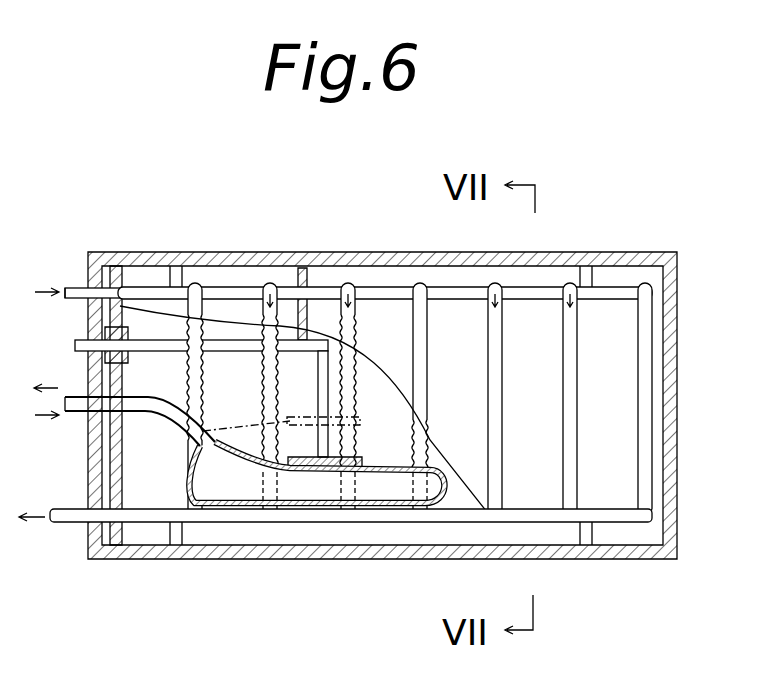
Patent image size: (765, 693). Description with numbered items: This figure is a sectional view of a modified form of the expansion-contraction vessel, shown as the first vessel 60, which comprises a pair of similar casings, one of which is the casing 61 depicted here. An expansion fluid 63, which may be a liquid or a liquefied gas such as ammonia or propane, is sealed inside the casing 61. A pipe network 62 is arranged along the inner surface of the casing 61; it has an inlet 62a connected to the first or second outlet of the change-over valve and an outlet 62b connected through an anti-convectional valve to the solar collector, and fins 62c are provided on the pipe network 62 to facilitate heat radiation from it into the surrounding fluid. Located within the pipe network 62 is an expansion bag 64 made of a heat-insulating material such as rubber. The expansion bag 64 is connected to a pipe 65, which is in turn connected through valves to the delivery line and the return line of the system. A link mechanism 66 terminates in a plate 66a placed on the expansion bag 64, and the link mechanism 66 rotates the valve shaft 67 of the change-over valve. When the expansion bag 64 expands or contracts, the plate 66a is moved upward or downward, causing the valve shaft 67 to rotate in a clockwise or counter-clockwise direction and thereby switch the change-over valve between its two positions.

The first vessel 60 is at (400, 244).
The casing 61 is at (600, 252).
The pipe network 62 is at (236, 288).
The inlet 62a is at (79, 288).
The outlet 62b is at (78, 522).
The fins 62c is at (203, 392).
The expansion fluid 63 is at (618, 438).
The expansion bag 64 is at (378, 506).
The pipe 65 is at (77, 412).
The link mechanism 66 is at (318, 394).
The plate 66a is at (408, 456).
The valve shaft 67 is at (76, 342).